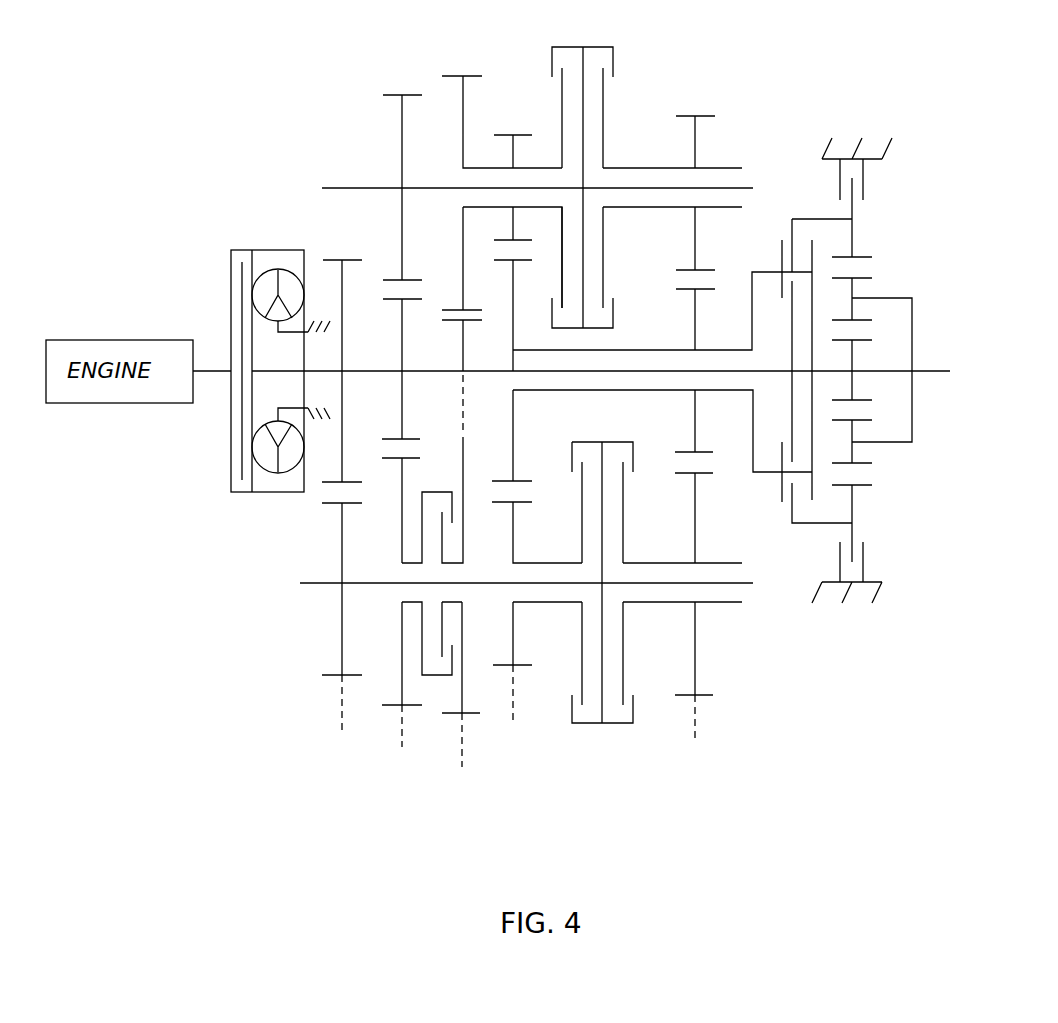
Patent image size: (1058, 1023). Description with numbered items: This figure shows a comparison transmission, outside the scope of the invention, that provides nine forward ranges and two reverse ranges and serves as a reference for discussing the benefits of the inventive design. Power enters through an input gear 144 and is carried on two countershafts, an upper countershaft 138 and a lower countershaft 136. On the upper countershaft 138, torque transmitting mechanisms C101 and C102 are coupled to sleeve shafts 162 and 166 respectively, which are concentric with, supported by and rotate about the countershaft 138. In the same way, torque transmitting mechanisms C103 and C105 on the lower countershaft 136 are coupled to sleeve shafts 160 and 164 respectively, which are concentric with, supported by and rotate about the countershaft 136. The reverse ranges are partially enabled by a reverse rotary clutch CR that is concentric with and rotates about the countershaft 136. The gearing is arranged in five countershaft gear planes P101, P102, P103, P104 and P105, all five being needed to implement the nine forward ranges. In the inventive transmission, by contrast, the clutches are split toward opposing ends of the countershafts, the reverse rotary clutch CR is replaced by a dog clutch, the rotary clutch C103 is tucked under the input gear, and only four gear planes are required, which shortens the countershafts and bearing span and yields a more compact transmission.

The countershaft 136 is at (308, 583).
The countershaft 138 is at (342, 188).
The input gear 144 is at (403, 424).
The reverse rotary clutch CR is at (441, 501).
The sleeve shaft 160 is at (540, 563).
The sleeve shaft 162 is at (482, 167).
The sleeve shaft 164 is at (655, 563).
The sleeve shaft 166 is at (628, 168).
The torque transmitting mechanism C101 is at (556, 82).
The torque transmitting mechanism C102 is at (611, 82).
The torque transmitting mechanism C103 is at (573, 688).
The torque transmitting mechanism C105 is at (630, 688).
The countershaft gear plane P101 is at (340, 717).
The countershaft gear plane P102 is at (400, 748).
The countershaft gear plane P103 is at (462, 760).
The countershaft gear plane P104 is at (513, 697).
The countershaft gear plane P105 is at (693, 723).